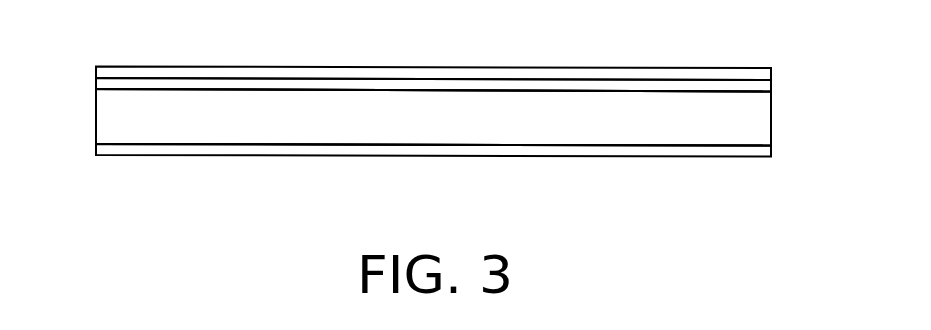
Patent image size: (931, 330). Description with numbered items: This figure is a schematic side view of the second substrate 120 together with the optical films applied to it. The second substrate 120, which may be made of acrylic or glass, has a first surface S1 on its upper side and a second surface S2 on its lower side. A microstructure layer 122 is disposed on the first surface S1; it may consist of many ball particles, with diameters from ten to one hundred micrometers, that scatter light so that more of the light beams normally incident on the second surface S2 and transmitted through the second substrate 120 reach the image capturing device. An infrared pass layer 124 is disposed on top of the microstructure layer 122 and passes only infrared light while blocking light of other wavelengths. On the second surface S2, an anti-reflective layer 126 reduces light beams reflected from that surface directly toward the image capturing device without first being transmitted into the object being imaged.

The second substrate 120 is at (771, 111).
The microstructure layer 122 is at (771, 83).
The infrared pass layer 124 is at (771, 73).
The anti-reflective layer 126 is at (771, 149).
The first surface S1 is at (143, 88).
The second surface S2 is at (145, 143).